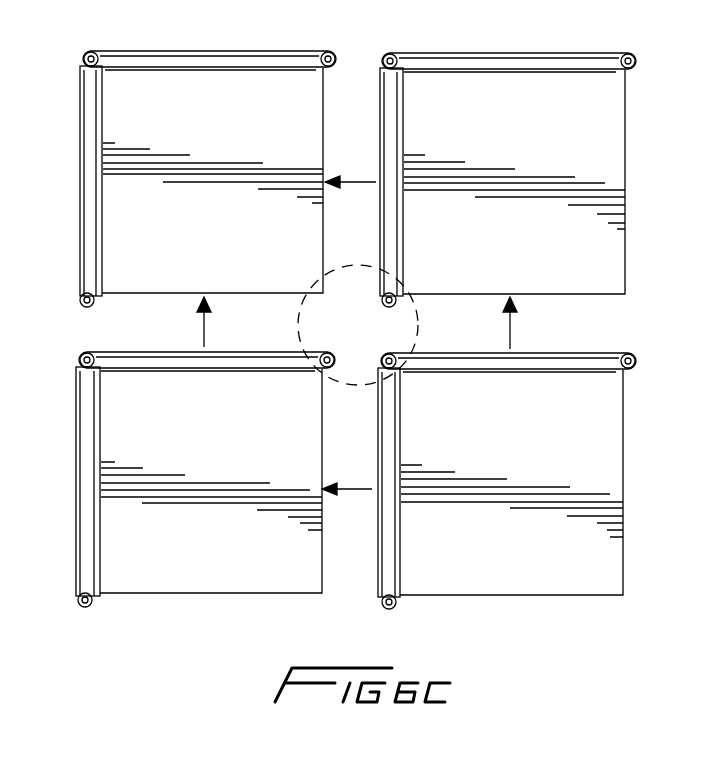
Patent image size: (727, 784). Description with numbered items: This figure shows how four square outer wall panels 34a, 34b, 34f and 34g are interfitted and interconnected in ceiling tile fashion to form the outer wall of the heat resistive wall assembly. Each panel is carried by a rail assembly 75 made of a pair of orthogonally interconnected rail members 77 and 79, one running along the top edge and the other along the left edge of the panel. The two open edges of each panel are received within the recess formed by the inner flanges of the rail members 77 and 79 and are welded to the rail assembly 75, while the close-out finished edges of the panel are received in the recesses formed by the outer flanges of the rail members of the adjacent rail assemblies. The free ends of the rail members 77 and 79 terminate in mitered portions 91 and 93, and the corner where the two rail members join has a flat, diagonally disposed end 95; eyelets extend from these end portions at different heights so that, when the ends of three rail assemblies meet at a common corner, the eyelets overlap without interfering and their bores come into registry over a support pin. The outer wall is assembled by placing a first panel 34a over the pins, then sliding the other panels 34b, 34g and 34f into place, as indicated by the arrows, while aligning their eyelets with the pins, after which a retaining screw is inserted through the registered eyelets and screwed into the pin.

The panel 34a is at (236, 461).
The panel 34b is at (520, 464).
The panel 34f is at (228, 220).
The panel 34g is at (530, 224).
The rail assembly 75 is at (186, 46).
The rail member 77 is at (90, 182).
The rail member 79 is at (231, 54).
The mitered portion 91 is at (382, 300).
The mitered portion 93 is at (318, 355).
The flat, diagonally disposed end 95 is at (393, 357).